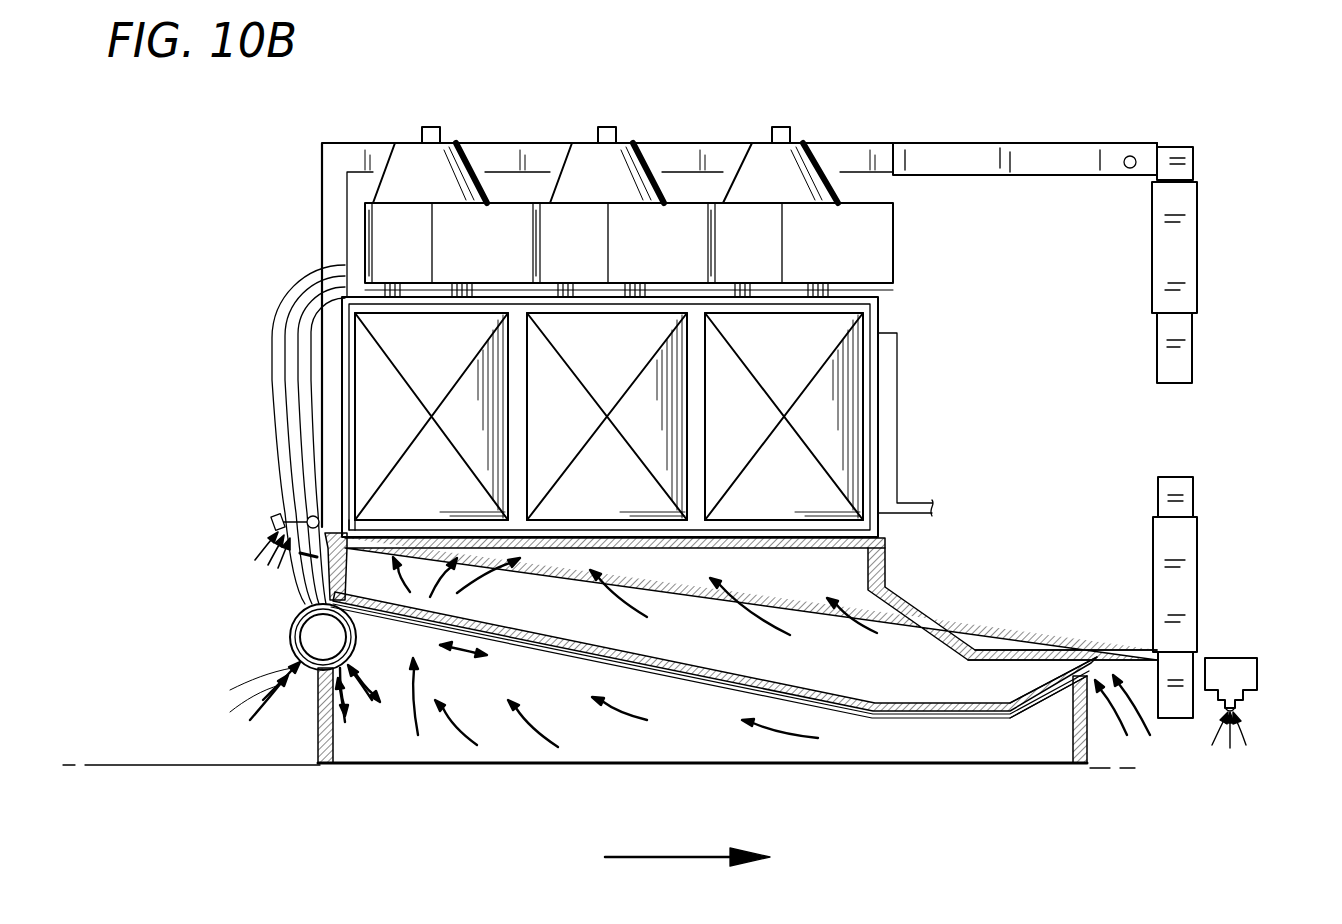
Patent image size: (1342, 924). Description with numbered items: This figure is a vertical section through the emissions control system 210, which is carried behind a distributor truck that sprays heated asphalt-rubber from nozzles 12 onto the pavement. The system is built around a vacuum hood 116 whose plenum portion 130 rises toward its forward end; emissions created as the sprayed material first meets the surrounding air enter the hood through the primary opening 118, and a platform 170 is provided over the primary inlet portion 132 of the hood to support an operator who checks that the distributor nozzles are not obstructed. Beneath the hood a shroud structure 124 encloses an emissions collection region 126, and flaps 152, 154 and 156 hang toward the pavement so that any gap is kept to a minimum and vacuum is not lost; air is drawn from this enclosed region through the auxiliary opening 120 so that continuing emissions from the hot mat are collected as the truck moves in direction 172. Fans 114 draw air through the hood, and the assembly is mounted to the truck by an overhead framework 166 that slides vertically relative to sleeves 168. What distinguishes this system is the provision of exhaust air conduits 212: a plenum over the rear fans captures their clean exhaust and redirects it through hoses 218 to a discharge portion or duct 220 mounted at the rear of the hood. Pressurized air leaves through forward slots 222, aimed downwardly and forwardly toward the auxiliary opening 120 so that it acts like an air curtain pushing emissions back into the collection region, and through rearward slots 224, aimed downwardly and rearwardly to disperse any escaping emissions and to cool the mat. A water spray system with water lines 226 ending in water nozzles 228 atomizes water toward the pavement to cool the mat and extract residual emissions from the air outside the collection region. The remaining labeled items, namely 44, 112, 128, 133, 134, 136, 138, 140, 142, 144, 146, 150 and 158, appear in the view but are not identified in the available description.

The nozzles 12 is at (1235, 708).
The spray gun 44 is at (1232, 658).
The filter 112 is at (345, 340).
The fans 114 is at (410, 160).
The vacuum hood 116 is at (300, 553).
The primary opening 118 is at (1097, 665).
The auxiliary opening 120 is at (397, 605).
The shroud structure 124 is at (725, 765).
The emissions collection region 126 is at (507, 742).
The ground level 128 is at (120, 763).
The plenum portion 130 is at (682, 672).
The primary inlet portion 132 is at (990, 724).
The baffle bend 133 is at (908, 690).
The corner panel 134 is at (350, 548).
The baffle inclined section 136 is at (585, 662).
The baffle end 138 is at (1030, 712).
The inclined baffle 140 is at (485, 652).
The air flow 142 is at (465, 655).
The corner wall 144 is at (328, 585).
The air flow path 146 is at (487, 618).
The top panel 150 is at (378, 550).
The flap 152 is at (318, 765).
The flap 154 is at (1088, 747).
The flap 156 is at (345, 745).
The baffle surface 158 is at (742, 662).
The overhead framework 166 is at (978, 148).
The sleeves 168 is at (1185, 240).
The platform 170 is at (1000, 655).
The direction of travel 172 is at (687, 881).
The emissions control system 210 is at (1075, 95).
The exhaust air conduits 212 is at (300, 272).
The hoses 218 is at (305, 300).
The discharge portion 220 is at (290, 637).
The forward slots 222 is at (360, 725).
The rearward slots 224 is at (290, 660).
The water lines 226 is at (897, 422).
The water nozzles 228 is at (272, 521).